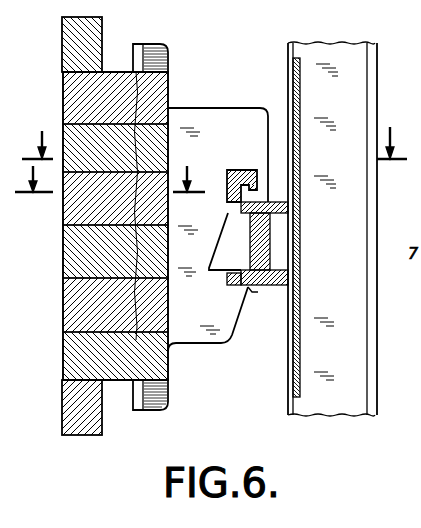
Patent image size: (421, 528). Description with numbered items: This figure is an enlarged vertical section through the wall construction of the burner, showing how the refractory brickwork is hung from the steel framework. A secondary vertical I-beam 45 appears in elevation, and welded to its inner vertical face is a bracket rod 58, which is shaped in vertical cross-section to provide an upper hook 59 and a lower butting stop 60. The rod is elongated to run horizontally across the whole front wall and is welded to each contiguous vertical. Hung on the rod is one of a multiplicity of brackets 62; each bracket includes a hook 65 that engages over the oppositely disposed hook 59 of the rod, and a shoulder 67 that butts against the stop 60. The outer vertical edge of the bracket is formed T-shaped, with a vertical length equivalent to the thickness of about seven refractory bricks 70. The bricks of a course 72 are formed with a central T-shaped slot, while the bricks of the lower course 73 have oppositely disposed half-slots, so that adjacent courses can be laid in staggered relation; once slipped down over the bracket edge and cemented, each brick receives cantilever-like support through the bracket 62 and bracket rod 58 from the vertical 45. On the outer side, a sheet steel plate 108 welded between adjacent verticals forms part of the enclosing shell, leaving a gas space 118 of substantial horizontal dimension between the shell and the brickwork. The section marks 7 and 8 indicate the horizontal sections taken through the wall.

The secondary vertical I-beam 45 is at (352, 229).
The bracket rod 58 is at (270, 267).
The upper hook 59 is at (243, 168).
The lower butting stop 60 is at (246, 292).
The bracket 62 is at (208, 118).
The hook 65 is at (225, 241).
The shoulder 67 is at (228, 282).
The refractory brick 70 is at (95, 226).
The brick course 72 is at (63, 135).
The lower brick course 73 is at (63, 212).
The plate 108 is at (300, 250).
The space 118 is at (245, 375).
The section line 7- 7 is at (215, 143).
The section line 8- 8 is at (110, 192).